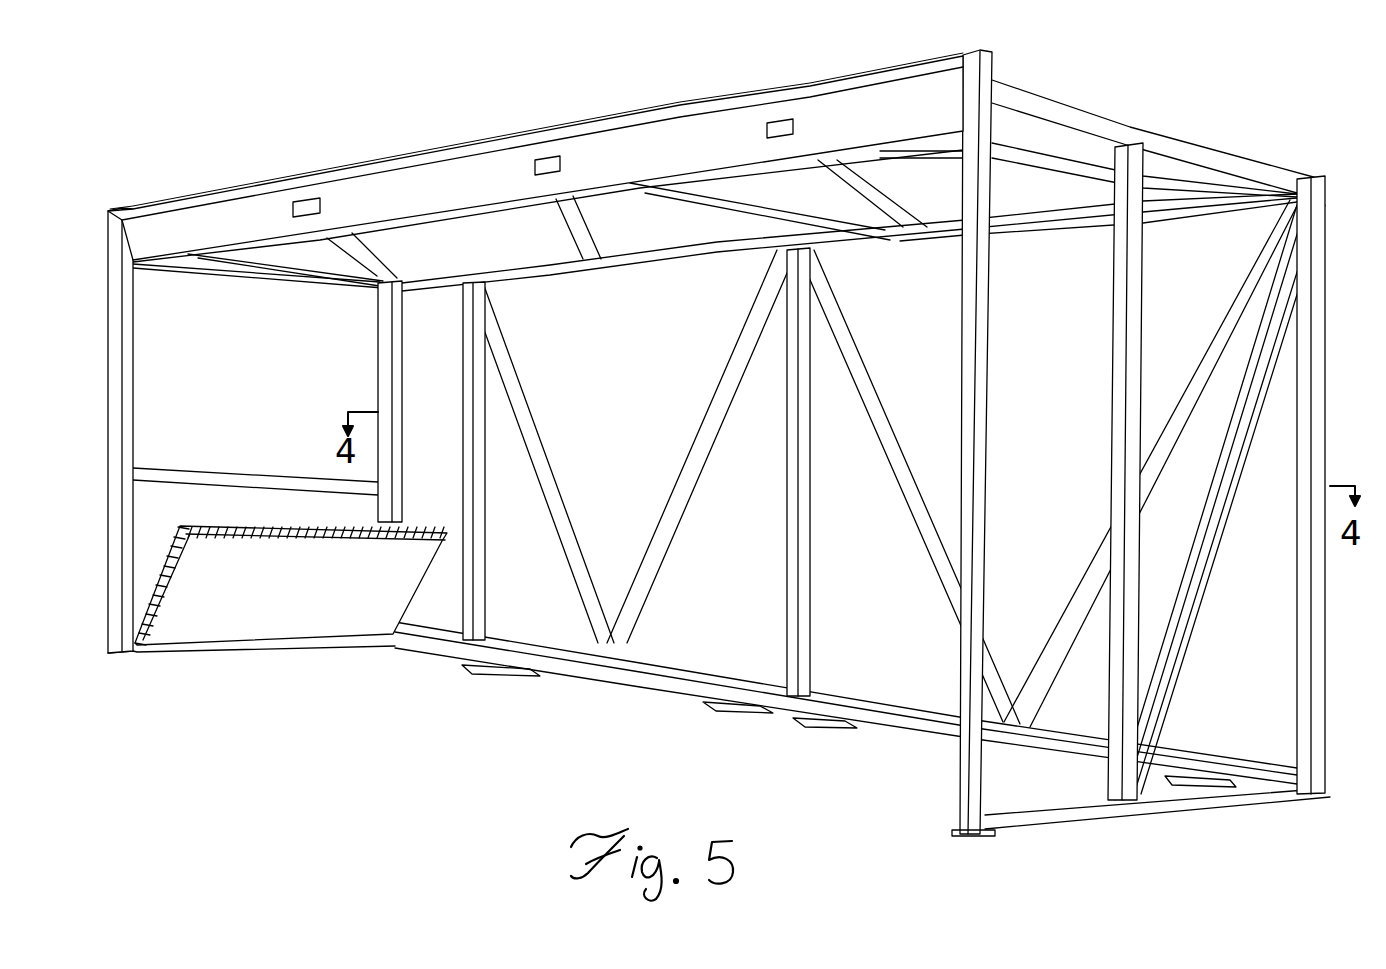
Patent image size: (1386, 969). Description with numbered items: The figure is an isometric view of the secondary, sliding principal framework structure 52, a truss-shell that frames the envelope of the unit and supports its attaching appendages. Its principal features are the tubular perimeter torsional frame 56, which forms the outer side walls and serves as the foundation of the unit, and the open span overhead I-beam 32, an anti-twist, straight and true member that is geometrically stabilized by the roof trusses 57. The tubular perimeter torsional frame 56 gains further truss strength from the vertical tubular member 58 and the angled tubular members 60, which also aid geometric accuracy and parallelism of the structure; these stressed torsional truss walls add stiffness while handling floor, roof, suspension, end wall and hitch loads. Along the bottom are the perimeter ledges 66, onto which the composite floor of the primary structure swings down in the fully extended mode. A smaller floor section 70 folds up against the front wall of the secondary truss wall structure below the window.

The open span overhead I-beam 32 is at (622, 140).
The secondary principal framework structure 52 is at (743, 450).
The tubular perimeter torsional frame 56 is at (743, 442).
The roof truss 57 is at (668, 222).
The vertical tubular member 58 is at (797, 522).
The angled tubular member 60 is at (692, 462).
The perimeter ledge 66 is at (825, 724).
The smaller floor section 70 is at (311, 550).